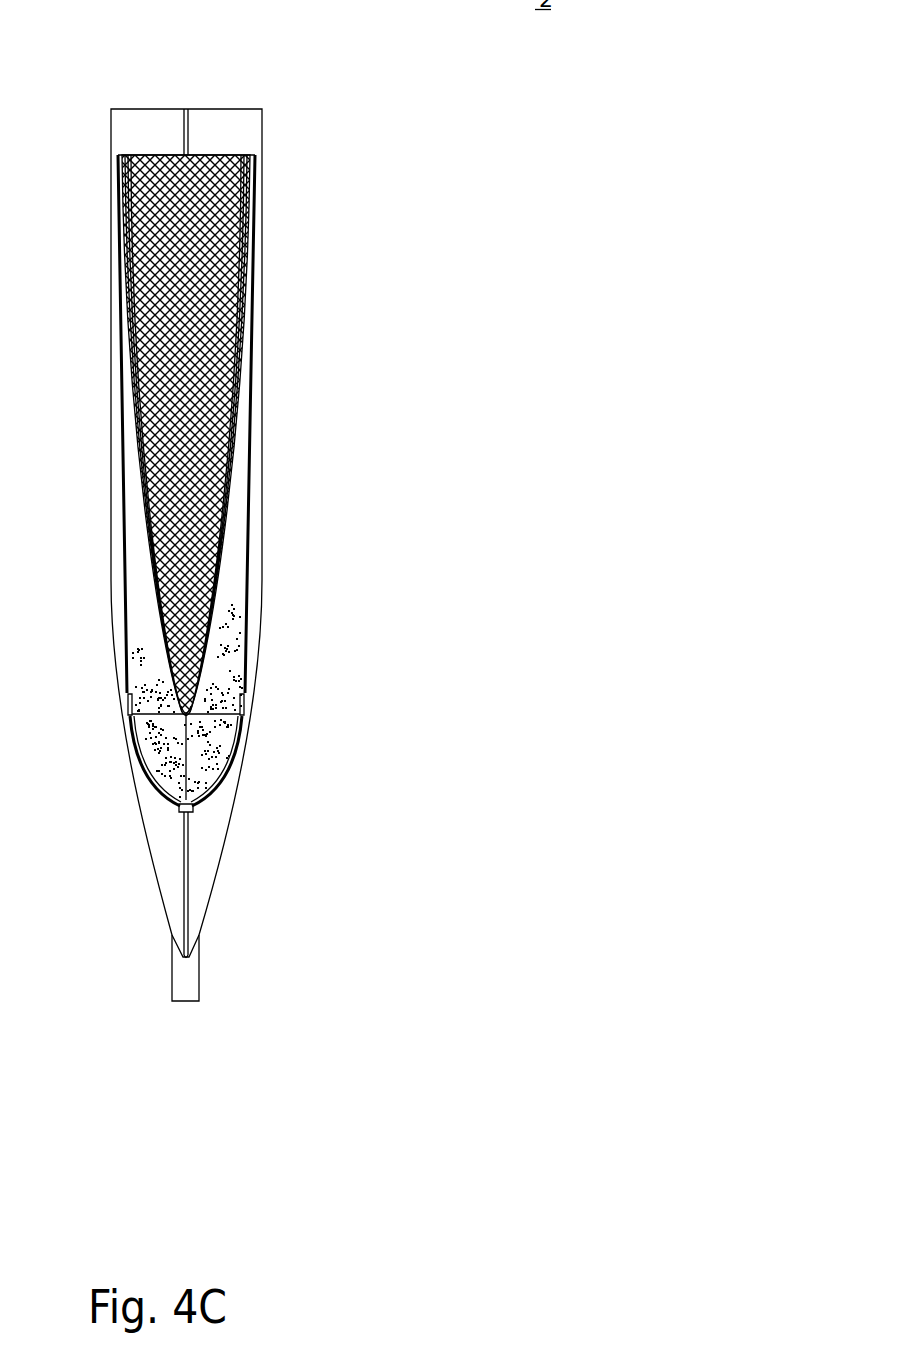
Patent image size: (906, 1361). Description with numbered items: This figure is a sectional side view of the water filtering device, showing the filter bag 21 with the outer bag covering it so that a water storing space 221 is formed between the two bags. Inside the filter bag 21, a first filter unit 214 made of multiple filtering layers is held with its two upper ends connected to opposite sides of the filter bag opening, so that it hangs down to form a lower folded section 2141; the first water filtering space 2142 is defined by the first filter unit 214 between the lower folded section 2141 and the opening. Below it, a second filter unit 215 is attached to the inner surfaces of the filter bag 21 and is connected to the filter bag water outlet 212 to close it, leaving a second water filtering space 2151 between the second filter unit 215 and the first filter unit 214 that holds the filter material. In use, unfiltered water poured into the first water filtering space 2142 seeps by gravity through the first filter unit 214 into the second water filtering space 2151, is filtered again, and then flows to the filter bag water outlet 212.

The filter bag 21 is at (257, 152).
The first filter unit 214 is at (254, 200).
The first water filtering space 2142 is at (203, 285).
The second water filtering space 2151 is at (237, 505).
The lower folded section 2141 is at (187, 712).
The second filter unit 215 is at (235, 743).
The filter bag water outlet 212 is at (188, 812).
The water storing space 221 is at (197, 879).